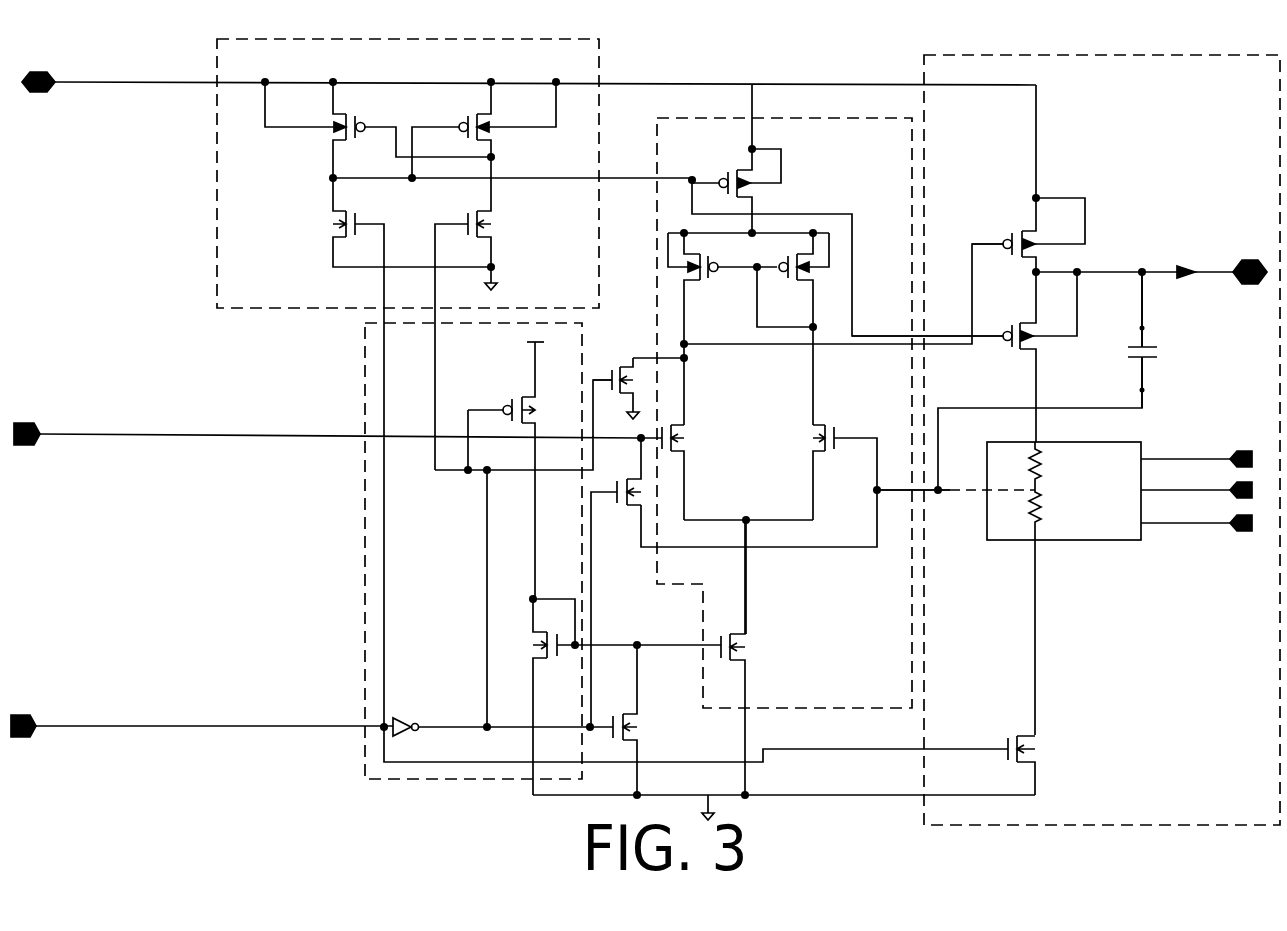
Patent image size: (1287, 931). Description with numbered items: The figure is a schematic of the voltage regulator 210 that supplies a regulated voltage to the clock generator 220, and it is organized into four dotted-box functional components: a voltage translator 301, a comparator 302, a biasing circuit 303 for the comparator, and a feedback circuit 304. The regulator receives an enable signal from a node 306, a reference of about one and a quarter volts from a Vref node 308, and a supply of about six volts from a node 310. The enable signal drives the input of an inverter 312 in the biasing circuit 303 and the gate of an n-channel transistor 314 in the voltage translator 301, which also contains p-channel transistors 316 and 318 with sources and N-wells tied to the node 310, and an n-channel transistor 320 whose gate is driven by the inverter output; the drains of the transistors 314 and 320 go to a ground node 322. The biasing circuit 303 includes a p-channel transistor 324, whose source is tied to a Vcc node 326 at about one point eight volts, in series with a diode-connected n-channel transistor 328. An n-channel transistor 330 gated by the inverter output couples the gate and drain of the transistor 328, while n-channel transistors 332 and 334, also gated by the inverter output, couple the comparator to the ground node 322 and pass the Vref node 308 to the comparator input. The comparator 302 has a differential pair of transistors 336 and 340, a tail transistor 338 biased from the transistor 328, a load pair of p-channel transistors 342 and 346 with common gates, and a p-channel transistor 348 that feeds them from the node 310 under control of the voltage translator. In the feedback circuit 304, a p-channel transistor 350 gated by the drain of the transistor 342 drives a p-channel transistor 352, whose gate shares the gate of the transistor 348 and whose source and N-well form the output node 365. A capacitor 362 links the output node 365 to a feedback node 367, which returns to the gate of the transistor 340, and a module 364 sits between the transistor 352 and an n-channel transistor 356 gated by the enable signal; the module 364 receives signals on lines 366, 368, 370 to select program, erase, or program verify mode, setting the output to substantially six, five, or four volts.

The voltage regulator 210 is at (280, 762).
The clock generator 220 is at (1185, 224).
The voltage translator 301 is at (603, 50).
The comparator 302 is at (725, 118).
The biasing circuit 303 is at (402, 782).
The feedback circuit 304 is at (970, 55).
The enable input node 306 is at (22, 733).
The Vref node 308 is at (28, 445).
The supply node 310 is at (40, 93).
The inverter 312 is at (399, 717).
The transistor 314 is at (318, 212).
The transistor 316 is at (305, 148).
The transistor 318 is at (518, 147).
The transistor 320 is at (507, 217).
The ground node 322 is at (497, 286).
The transistor 324 is at (514, 387).
The Vcc node 326 is at (538, 340).
The transistor 328 is at (506, 627).
The transistor 330 is at (646, 734).
The transistor 332 is at (607, 376).
The transistor 334 is at (626, 510).
The transistor 336 is at (707, 439).
The transistor 338 is at (759, 642).
The transistor 340 is at (792, 456).
The transistor 342 is at (697, 288).
The transistor 346 is at (779, 296).
The transistor 348 is at (786, 165).
The transistor 350 is at (1077, 181).
The transistor 352 is at (1052, 351).
The transistor 356 is at (1060, 742).
The capacitor 362 is at (1167, 366).
The module 364 is at (1105, 543).
The output node 365 is at (1247, 286).
The program line 366 is at (1208, 458).
The feedback node 367 is at (950, 496).
The erase line 368 is at (1152, 488).
The program verify line 370 is at (1168, 524).